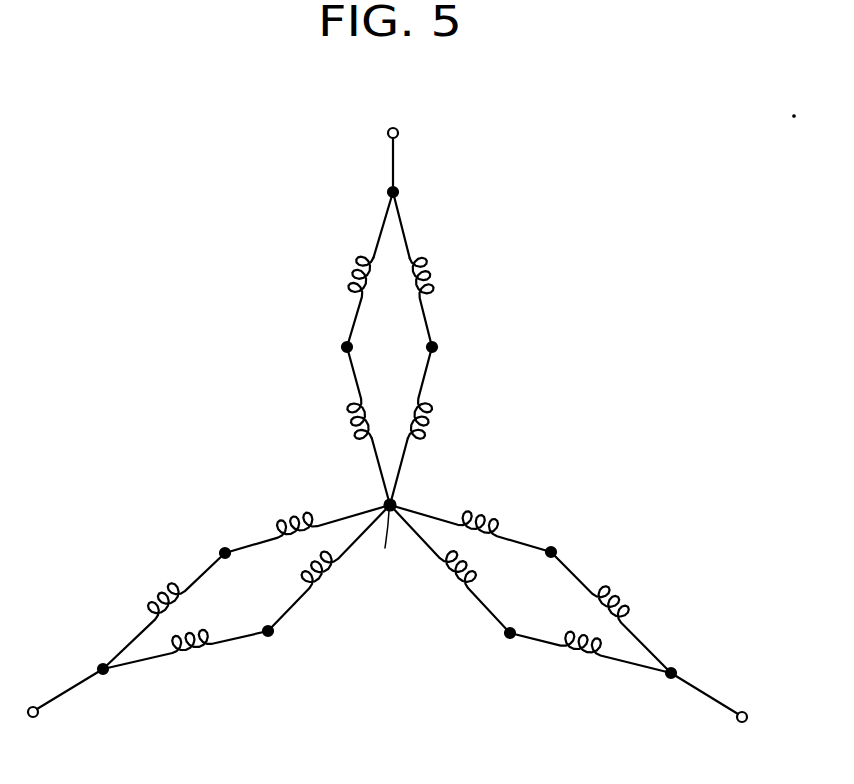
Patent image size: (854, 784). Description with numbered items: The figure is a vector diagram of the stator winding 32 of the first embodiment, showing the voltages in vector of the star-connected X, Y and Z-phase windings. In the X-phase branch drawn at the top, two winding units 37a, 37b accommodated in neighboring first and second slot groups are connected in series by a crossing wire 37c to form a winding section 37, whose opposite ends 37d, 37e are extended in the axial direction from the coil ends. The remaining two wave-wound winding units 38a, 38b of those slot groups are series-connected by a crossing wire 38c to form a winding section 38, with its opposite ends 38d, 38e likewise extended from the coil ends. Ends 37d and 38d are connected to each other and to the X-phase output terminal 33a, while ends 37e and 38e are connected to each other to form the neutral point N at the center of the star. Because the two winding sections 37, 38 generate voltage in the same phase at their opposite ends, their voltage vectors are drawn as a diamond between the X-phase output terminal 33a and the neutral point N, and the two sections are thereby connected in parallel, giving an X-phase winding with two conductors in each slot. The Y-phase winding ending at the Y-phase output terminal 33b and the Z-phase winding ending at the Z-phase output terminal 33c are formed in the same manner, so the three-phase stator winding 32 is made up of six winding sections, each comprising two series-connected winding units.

The stator winding 32 is at (616, 274).
The X-phase output terminal 33a is at (388, 130).
The Y-phase output terminal 33b is at (748, 713).
The Z-phase output terminal 33c is at (39, 713).
The winding section 37 is at (253, 163).
The winding unit 37a is at (367, 268).
The winding unit 37b is at (363, 413).
The crossing wire 37c is at (345, 341).
The end of winding section 37d is at (383, 223).
The end of winding section 37e is at (372, 463).
The winding section 38 is at (535, 163).
The winding unit 38a is at (425, 418).
The winding unit 38b is at (427, 273).
The crossing wire 38c is at (437, 341).
The end of winding section 38d is at (403, 223).
The end of winding section 38e is at (402, 463).